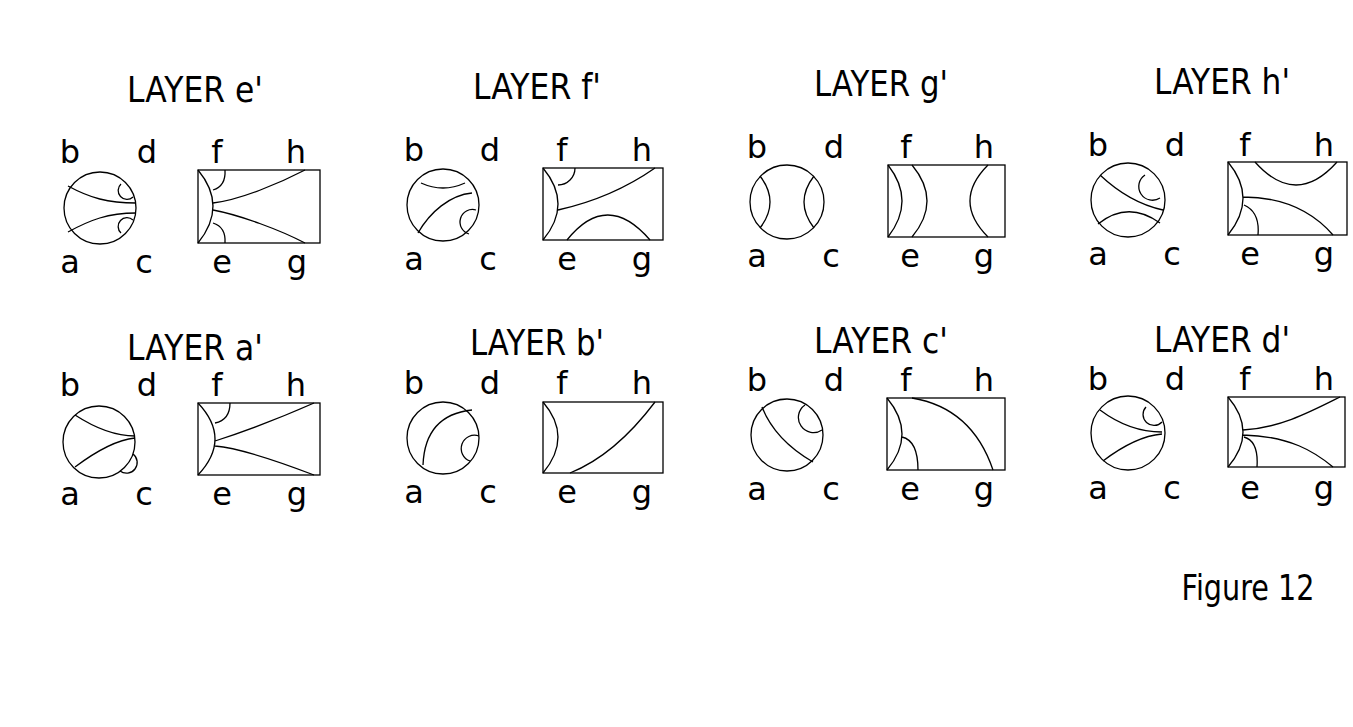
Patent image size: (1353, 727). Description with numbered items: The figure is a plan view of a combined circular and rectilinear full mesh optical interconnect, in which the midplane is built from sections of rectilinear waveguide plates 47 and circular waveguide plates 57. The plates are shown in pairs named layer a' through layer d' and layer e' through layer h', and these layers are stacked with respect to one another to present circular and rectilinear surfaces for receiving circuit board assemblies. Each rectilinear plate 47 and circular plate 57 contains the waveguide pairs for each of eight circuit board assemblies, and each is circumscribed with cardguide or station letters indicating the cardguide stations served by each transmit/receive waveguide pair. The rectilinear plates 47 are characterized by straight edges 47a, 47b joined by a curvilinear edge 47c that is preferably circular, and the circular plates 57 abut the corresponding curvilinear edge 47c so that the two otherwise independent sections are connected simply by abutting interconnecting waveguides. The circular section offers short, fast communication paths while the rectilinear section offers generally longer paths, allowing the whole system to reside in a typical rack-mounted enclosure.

The rectilinear waveguide plate 47 is at (608, 168).
The straight edge 47a is at (245, 170).
The straight edge 47b is at (257, 243).
The curvilinear edge 47c is at (213, 210).
The circular waveguide plate 57 is at (788, 157).